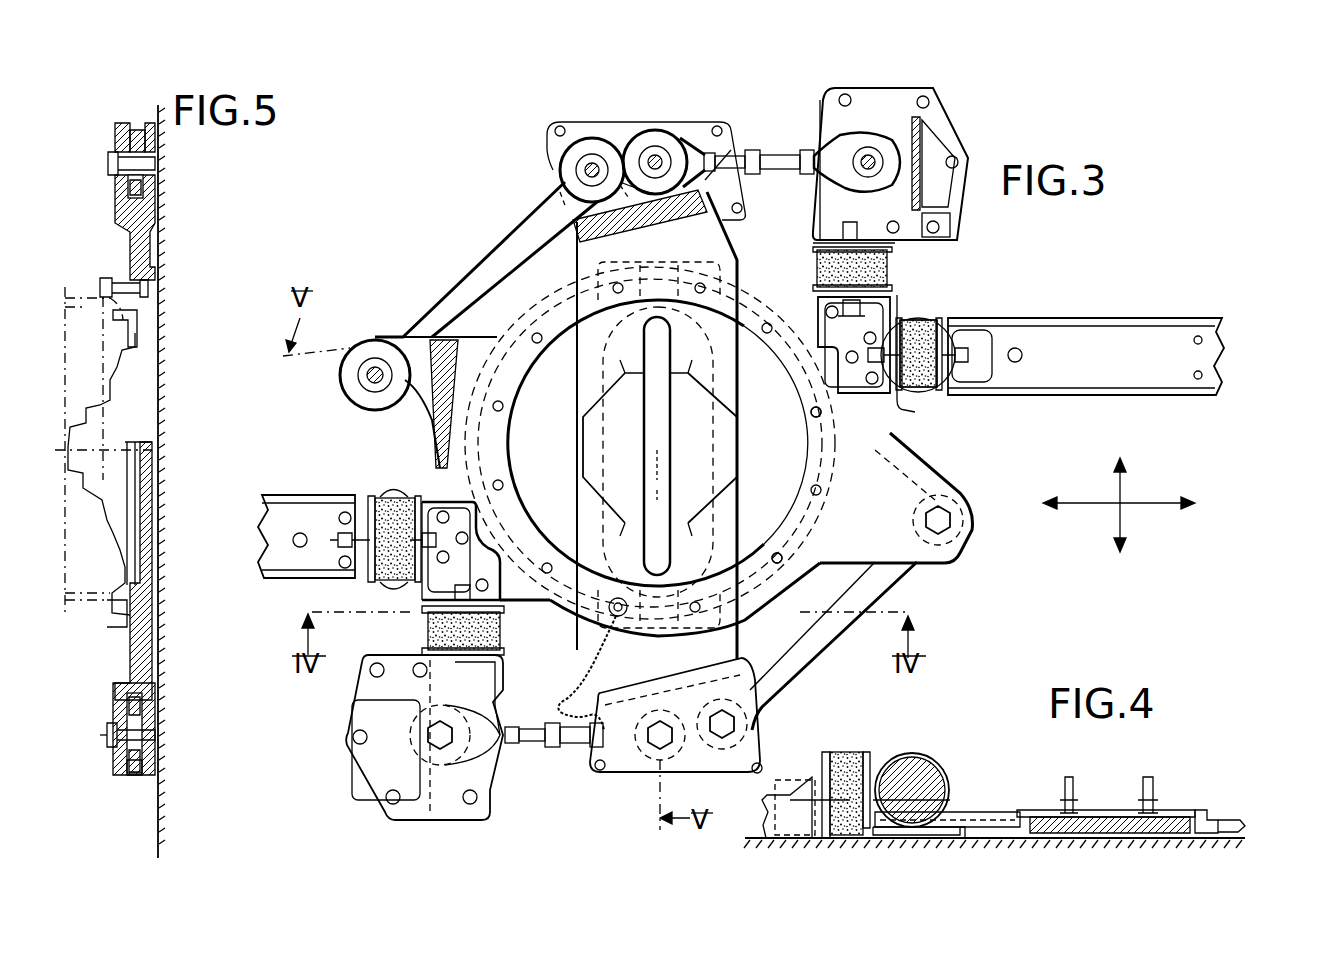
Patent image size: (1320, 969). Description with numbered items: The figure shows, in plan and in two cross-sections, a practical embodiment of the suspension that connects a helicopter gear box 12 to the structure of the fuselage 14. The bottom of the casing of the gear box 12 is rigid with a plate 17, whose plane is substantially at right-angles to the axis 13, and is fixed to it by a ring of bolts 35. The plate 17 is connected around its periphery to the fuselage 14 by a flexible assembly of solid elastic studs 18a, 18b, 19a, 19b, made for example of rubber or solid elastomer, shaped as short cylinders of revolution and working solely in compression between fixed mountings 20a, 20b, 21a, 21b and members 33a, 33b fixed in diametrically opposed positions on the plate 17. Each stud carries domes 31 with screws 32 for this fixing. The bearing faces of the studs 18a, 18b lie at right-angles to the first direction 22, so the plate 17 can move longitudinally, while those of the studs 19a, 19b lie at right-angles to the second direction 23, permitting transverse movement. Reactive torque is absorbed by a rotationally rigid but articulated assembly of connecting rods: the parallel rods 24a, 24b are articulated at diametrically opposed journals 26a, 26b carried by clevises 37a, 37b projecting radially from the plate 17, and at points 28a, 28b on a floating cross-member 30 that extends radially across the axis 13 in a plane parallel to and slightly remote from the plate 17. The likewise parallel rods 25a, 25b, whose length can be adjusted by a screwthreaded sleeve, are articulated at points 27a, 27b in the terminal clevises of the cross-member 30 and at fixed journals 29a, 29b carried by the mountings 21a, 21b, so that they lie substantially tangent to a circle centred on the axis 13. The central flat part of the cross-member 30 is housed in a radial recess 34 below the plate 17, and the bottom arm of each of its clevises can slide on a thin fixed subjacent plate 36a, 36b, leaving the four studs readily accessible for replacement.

In FIG. 5, the gear box 12 is at (78, 300).
In FIG. 3, the axis 13 is at (657, 470).
In FIG. 5, the axis 13 is at (78, 450).
In FIG. 4, the fuselage 14 is at (965, 838).
In FIG. 5, the fuselage 14 is at (155, 820).
In FIG. 3, the plate 17 is at (810, 462).
In FIG. 4, the plate 17 is at (1005, 810).
In FIG. 5, the plate 17 is at (128, 245).
In FIG. 3, the elastic stud 18a is at (390, 497).
In FIG. 4, the elastic stud 18a is at (845, 755).
In FIG. 3, the elastic stud 18b is at (925, 325).
In FIG. 3, the elastic stud 19a is at (425, 628).
In FIG. 4, the elastic stud 19a is at (935, 770).
In FIG. 3, the elastic stud 19b is at (888, 268).
In FIG. 3, the mounting 20a is at (288, 497).
In FIG. 4, the mounting 20a is at (810, 833).
In FIG. 3, the mounting 20b is at (1012, 318).
In FIG. 3, the mounting 21a is at (362, 770).
In FIG. 3, the mounting 21b is at (952, 132).
In FIG. 3, the first direction 22 is at (1122, 505).
In FIG. 3, the second direction 23 is at (1122, 500).
In FIG. 3, the connecting rod 24a is at (842, 612).
In FIG. 3, the connecting rod 24b is at (462, 275).
In FIG. 5, the connecting rod 24b is at (135, 126).
In FIG. 3, the connecting rod 25a is at (555, 748).
In FIG. 5, the connecting rod 25a is at (135, 775).
In FIG. 3, the connecting rod 25b is at (765, 150).
In FIG. 3, the articulation point 26a is at (945, 525).
In FIG. 3, the articulation point 26b is at (375, 367).
In FIG. 5, the articulation point 26b is at (108, 165).
In FIG. 3, the articulation point 27a is at (660, 748).
In FIG. 5, the articulation point 27a is at (105, 738).
In FIG. 3, the articulation point 27b is at (658, 148).
In FIG. 3, the articulation point 28a is at (740, 722).
In FIG. 3, the articulation point 28b is at (576, 170).
In FIG. 3, the fixed point 29a is at (442, 752).
In FIG. 3, the fixed point 29b is at (868, 155).
In FIG. 3, the floating cross-member 30 is at (693, 250).
In FIG. 4, the floating cross-member 30 is at (1198, 810).
In FIG. 5, the floating cross-member 30 is at (153, 631).
In FIG. 3, the dome 31 is at (905, 398).
In FIG. 3, the screw 32 is at (850, 230).
In FIG. 3, the fixing member 33a is at (470, 550).
In FIG. 4, the fixing member 33a is at (885, 770).
In FIG. 3, the fixing member 33b is at (828, 350).
In FIG. 4, the radial recess 34 is at (1228, 820).
In FIG. 3, the bolt 35 is at (777, 553).
In FIG. 5, the bolt 35 is at (150, 287).
In FIG. 3, the fixed subjacent plate 36a is at (595, 765).
In FIG. 5, the fixed subjacent plate 36a is at (156, 737).
In FIG. 3, the fixed subjacent plate 36b is at (600, 128).
In FIG. 3, the clevis 37a is at (945, 485).
In FIG. 3, the clevis 37b is at (412, 400).